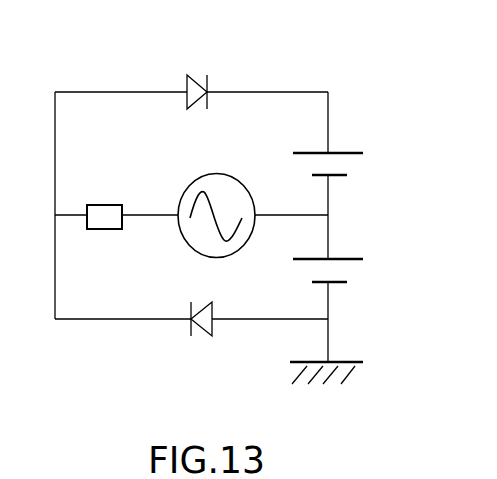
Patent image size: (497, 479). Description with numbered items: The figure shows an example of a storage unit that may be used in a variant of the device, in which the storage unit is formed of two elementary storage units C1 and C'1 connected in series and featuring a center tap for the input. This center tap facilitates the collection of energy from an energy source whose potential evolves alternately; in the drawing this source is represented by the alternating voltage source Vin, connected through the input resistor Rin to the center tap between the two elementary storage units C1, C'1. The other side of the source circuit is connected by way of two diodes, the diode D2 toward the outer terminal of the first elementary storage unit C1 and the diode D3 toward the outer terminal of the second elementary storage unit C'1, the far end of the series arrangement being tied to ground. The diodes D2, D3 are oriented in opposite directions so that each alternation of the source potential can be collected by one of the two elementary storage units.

The diode D2 is at (199, 76).
The diode D3 is at (204, 337).
The input resistor Rin is at (104, 202).
The input voltage source Vin is at (265, 162).
The elementary storage unit C1 is at (355, 167).
The elementary storage unit C'1 is at (366, 265).